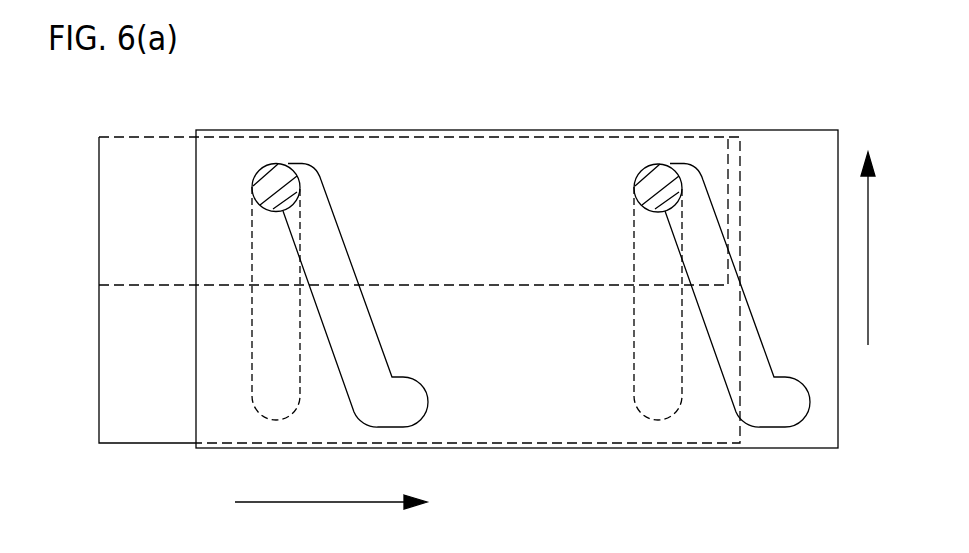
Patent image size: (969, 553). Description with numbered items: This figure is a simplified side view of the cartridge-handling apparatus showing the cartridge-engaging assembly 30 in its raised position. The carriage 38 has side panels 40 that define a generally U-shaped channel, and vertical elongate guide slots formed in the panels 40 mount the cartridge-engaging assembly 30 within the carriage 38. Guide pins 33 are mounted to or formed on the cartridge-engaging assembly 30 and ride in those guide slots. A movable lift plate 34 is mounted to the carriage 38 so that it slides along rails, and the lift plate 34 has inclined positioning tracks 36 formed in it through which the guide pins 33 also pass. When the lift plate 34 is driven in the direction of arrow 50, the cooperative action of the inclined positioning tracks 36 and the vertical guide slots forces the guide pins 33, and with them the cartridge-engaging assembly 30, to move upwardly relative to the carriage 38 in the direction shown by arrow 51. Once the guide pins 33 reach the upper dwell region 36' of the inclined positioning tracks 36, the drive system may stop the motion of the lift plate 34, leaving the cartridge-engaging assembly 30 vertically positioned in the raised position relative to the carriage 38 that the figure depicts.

The cartridge-engaging assembly 30 is at (150, 287).
The guide pins 33 is at (248, 176).
The lift plate 34 is at (653, 448).
The inclined positioning tracks 36 is at (358, 303).
The upper dwell region 36' is at (335, 162).
The carriage 38 is at (100, 395).
The panels 40 is at (249, 322).
The arrow 50 is at (273, 502).
The arrow 51 is at (866, 195).